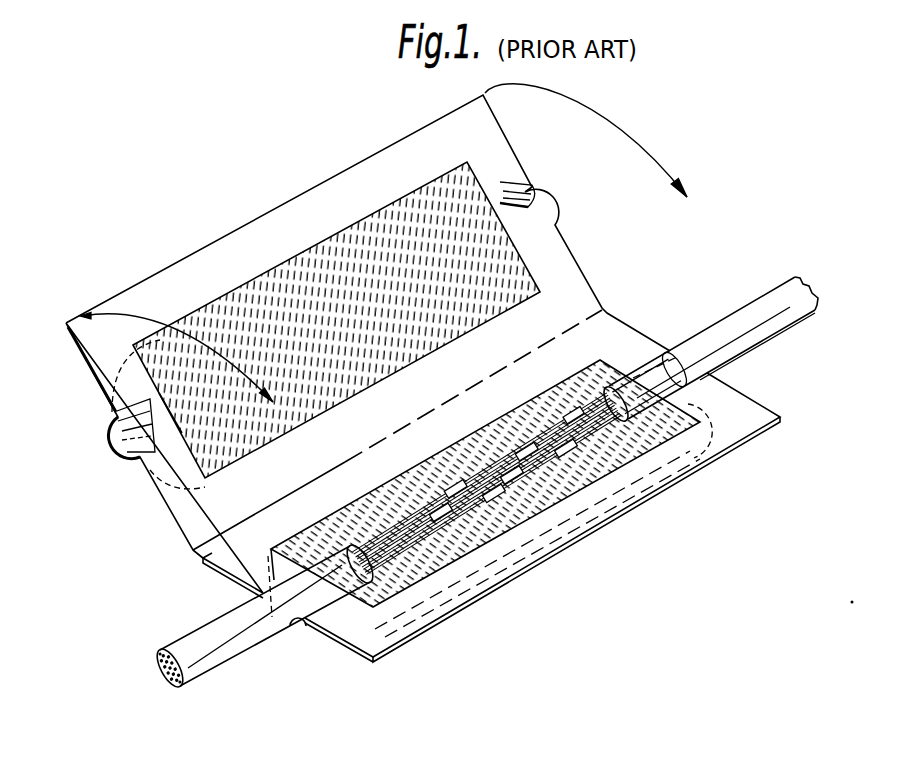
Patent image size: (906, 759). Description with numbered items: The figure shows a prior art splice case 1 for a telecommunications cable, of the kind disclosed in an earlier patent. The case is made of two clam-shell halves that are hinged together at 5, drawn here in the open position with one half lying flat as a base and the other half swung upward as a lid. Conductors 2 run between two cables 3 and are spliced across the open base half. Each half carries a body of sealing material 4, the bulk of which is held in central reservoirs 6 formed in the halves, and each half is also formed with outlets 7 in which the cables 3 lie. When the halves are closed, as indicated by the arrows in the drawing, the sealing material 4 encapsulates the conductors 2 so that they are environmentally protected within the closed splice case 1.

The splice case 1 is at (640, 470).
The conductors 2 is at (513, 493).
The cables 3 is at (212, 643).
The sealing material 4 is at (293, 277).
The hinge 5 is at (208, 552).
The central reservoirs 6 is at (163, 482).
The outlets 7 is at (537, 200).